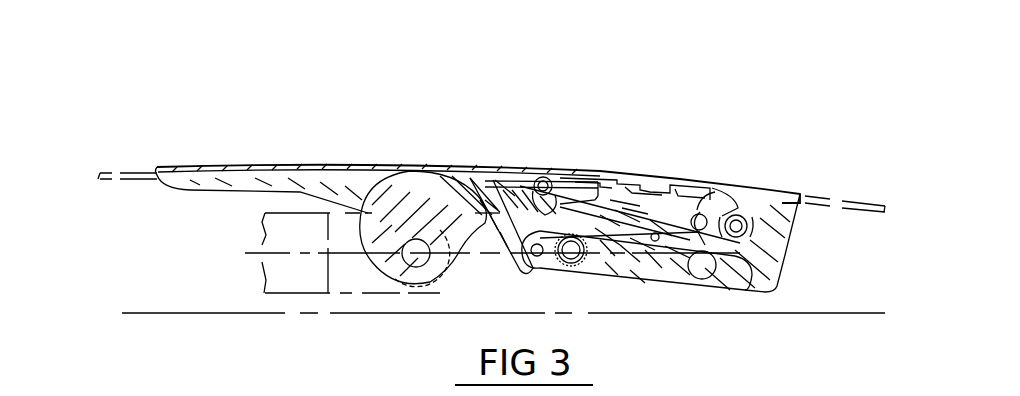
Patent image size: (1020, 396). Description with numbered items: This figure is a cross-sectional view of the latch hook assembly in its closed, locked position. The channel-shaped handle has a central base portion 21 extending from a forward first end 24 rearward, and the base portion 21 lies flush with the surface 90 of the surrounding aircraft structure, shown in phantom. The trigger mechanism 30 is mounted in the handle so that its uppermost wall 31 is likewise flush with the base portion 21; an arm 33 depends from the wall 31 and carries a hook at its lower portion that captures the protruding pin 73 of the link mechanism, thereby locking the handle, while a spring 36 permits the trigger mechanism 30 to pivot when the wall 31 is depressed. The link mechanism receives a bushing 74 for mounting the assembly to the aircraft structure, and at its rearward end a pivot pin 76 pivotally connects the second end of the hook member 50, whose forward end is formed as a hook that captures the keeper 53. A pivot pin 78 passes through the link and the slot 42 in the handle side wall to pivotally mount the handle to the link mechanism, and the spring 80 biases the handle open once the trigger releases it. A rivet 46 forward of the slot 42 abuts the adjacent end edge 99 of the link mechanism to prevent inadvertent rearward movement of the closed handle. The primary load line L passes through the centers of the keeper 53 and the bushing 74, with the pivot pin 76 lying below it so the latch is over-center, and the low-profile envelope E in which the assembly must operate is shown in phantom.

The base portion 21 is at (300, 166).
The forward first end 24 is at (236, 166).
The trigger mechanism 30 is at (548, 166).
The uppermost wall 31 is at (490, 166).
The arm 33 is at (513, 216).
The spring 36 is at (450, 174).
The slot 42 is at (726, 214).
The rivet 46 is at (733, 180).
The hook member 50 is at (408, 205).
The keeper 53 is at (418, 262).
The pin 73 is at (537, 258).
The bushing 74 is at (582, 262).
The pivot pin 76 is at (700, 280).
The pivot pin 78 is at (778, 244).
The spring 80 is at (697, 186).
The surface 90 is at (133, 168).
The end edge 99 is at (705, 218).
The load line L is at (262, 256).
The envelope E is at (180, 314).